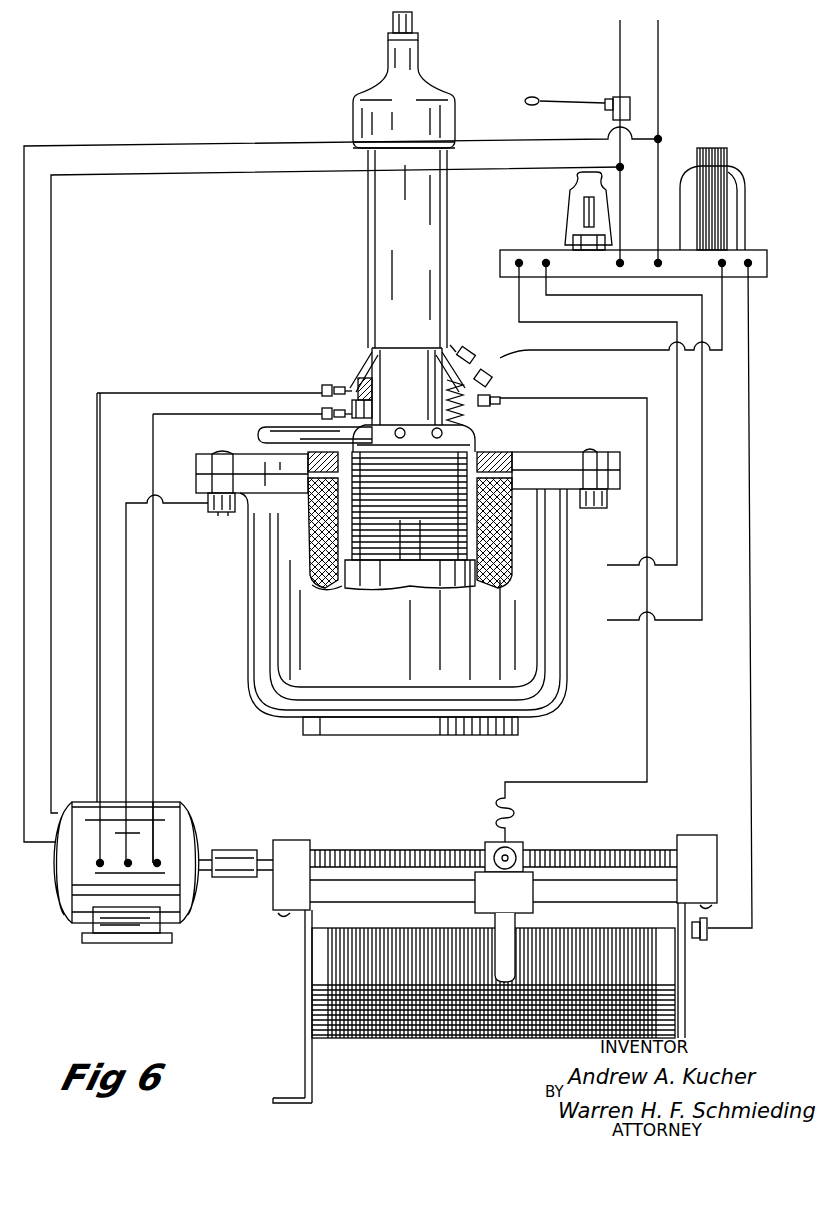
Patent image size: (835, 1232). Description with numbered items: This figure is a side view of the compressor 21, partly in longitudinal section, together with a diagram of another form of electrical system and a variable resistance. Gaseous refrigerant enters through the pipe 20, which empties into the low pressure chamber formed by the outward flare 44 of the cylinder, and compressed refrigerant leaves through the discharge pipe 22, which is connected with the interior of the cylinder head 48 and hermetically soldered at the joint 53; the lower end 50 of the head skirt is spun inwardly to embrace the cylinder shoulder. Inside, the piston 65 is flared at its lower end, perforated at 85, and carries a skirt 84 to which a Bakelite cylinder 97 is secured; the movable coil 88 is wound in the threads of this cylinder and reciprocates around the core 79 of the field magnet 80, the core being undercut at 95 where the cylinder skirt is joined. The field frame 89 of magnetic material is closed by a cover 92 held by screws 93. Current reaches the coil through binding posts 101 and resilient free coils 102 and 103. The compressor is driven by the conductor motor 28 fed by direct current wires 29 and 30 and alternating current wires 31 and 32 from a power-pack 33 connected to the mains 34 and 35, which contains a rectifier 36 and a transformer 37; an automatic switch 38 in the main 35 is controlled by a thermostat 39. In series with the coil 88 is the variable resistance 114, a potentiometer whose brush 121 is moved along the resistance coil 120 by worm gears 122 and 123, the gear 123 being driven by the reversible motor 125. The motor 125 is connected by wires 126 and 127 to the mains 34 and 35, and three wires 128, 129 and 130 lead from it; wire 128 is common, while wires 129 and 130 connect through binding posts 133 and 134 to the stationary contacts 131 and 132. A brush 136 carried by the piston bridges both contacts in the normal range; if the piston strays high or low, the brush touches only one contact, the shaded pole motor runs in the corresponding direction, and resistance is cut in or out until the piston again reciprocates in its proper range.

The pipe 20 is at (258, 434).
The compressor 21 is at (390, 232).
The discharge pipe 22 is at (414, 22).
The conductor motor 28 is at (410, 727).
The wire 29 is at (703, 398).
The wire 30 is at (676, 385).
The wire 31 is at (576, 350).
The wire 32 is at (647, 532).
The power-pack 33 is at (548, 252).
The alternating current main 34 is at (660, 52).
The alternating current main 35 is at (618, 38).
The rectifier 36 is at (574, 192).
The transformer 37 is at (724, 155).
The automatic switch 38 is at (613, 98).
The thermostat 39 is at (527, 101).
The flared portion 44 is at (367, 352).
The cylinder head 48 is at (435, 78).
The lower end of skirt 50 is at (449, 150).
The joint 53 is at (418, 37).
The piston 65 is at (428, 357).
The core 79 is at (396, 580).
The field magnet 80 is at (320, 512).
The skirt 84 is at (470, 446).
The perforation 85 is at (466, 421).
The movable coil 88 is at (500, 452).
The field frame 89 is at (258, 690).
The cover 92 is at (606, 454).
The screws 93 is at (222, 513).
The undercut 95 is at (325, 590).
The cylinder of dielectric material 97 is at (400, 512).
The binding post 101 is at (475, 357).
The free coil 102 is at (484, 380).
The free coil 103 is at (494, 401).
The variable resistance 114 is at (248, 1007).
The resistance coil 120 is at (651, 993).
The brush 121 is at (515, 920).
The worm gear 122 is at (520, 851).
The worm gear 123 is at (585, 851).
The reversible motor 125 is at (175, 825).
The wire 126 is at (124, 146).
The wire 127 is at (208, 173).
The wire 128 is at (128, 630).
The wire 129 is at (206, 393).
The wire 130 is at (156, 686).
The contact 131 is at (355, 385).
The contact 132 is at (372, 392).
The binding post 133 is at (330, 386).
The binding post 134 is at (322, 413).
The brush 136 is at (373, 410).